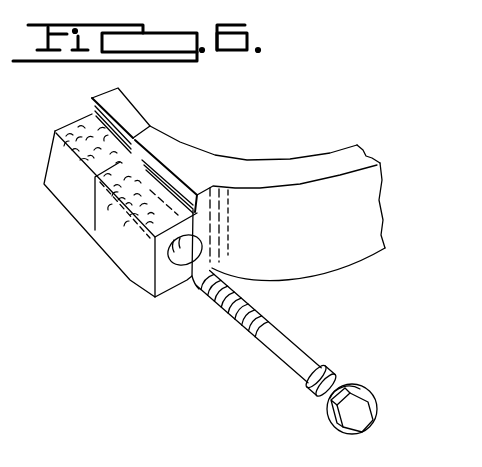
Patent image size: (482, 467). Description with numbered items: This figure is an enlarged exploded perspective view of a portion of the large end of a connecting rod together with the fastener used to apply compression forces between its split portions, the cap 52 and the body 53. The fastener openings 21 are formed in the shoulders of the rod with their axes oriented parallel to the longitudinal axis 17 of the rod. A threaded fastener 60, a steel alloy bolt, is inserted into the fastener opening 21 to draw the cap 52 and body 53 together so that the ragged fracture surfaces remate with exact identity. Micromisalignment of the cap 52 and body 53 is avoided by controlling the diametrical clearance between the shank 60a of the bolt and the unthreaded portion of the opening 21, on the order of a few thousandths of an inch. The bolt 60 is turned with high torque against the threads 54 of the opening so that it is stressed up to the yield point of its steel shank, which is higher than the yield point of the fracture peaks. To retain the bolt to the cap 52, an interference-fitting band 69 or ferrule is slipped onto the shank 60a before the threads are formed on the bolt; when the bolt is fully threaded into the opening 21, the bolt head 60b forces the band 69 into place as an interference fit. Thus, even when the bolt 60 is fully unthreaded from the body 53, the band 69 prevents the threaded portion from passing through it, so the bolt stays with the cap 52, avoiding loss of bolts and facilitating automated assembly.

The longitudinal axis 17 is at (247, 158).
The fastener opening 21 is at (133, 280).
The cap 52 is at (350, 203).
The body 53 is at (128, 106).
The threads 54 is at (56, 129).
The threaded fastener 60 is at (320, 353).
The shank 60a is at (291, 346).
The bolt head 60b is at (367, 410).
The interference-fitting band 69 is at (332, 372).